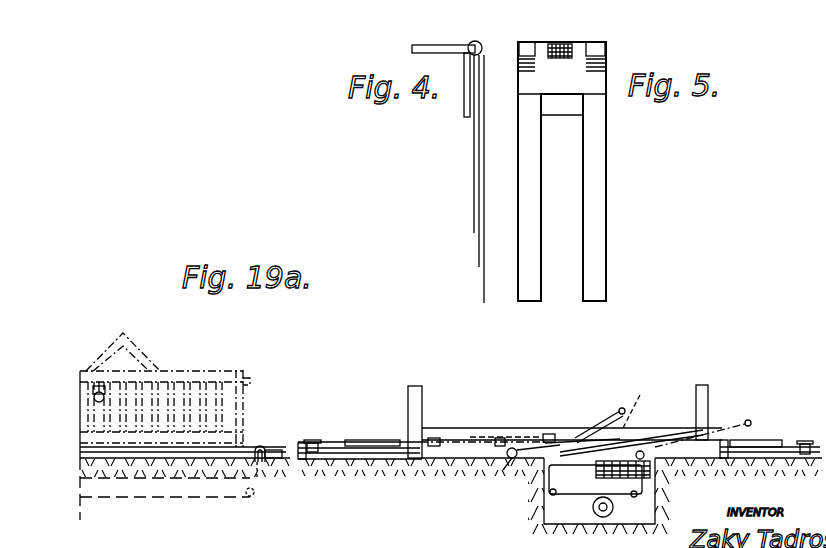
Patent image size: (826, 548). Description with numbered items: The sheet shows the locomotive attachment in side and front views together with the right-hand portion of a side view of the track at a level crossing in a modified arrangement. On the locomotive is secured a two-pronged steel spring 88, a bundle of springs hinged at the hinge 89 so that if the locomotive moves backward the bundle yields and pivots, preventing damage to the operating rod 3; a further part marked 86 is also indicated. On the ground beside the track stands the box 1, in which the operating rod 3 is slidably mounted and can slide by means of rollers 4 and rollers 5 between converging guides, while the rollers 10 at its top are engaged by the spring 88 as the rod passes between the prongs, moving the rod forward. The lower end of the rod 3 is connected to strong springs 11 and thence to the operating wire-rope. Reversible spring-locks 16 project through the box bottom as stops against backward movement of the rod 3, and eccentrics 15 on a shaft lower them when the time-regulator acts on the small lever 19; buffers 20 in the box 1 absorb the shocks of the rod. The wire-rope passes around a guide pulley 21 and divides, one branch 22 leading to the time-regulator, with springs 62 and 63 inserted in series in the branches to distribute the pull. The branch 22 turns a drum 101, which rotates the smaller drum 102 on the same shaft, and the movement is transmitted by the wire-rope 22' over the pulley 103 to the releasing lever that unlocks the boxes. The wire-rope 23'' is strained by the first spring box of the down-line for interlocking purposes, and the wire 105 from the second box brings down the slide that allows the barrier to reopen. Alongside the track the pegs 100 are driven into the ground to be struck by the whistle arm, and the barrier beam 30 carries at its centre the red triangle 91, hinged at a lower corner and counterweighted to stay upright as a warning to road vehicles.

In FIG. 4, the two-pronged steel spring 88 is at (481, 214).
In FIG. 5, the two-pronged steel spring 88 is at (596, 173).
In FIG. 4, the hinge 89 is at (472, 56).
In FIG. 5, the hinge 89 is at (598, 56).
In FIG. 19A, the guide member 86 is at (138, 6).
In FIG. 19A, the box 1 is at (463, 428).
In FIG. 19A, the operating rod 3 is at (597, 420).
In FIG. 19A, the rollers 4 is at (508, 462).
In FIG. 19A, the rollers 5 is at (556, 432).
In FIG. 19A, the rollers 10 is at (760, 393).
In FIG. 19A, the strong springs 11 is at (470, 450).
In FIG. 19A, the eccentrics 15 is at (596, 478).
In FIG. 19A, the reversible spring-locks 16 is at (637, 448).
In FIG. 19A, the small lever 19 is at (662, 472).
In FIG. 19A, the buffers 20 is at (712, 456).
In FIG. 19A, the guide pulley 21 is at (313, 441).
In FIG. 19A, the wire-rope branch 22 is at (579, 498).
In FIG. 19A, the wire-rope 22' is at (679, 517).
In FIG. 19A, the wire-rope 23'' is at (165, 511).
In FIG. 19A, the beam 30 is at (207, 376).
In FIG. 19A, the spring 62 is at (357, 441).
In FIG. 19A, the spring 63 is at (766, 440).
In FIG. 19A, the red triangle 91 is at (145, 365).
In FIG. 19A, the pegs 100 is at (415, 386).
In FIG. 19A, the drum 101 is at (590, 512).
In FIG. 19A, the smaller drum 102 is at (562, 504).
In FIG. 19A, the pulley 103 is at (638, 509).
In FIG. 19A, the wire 105 is at (268, 447).